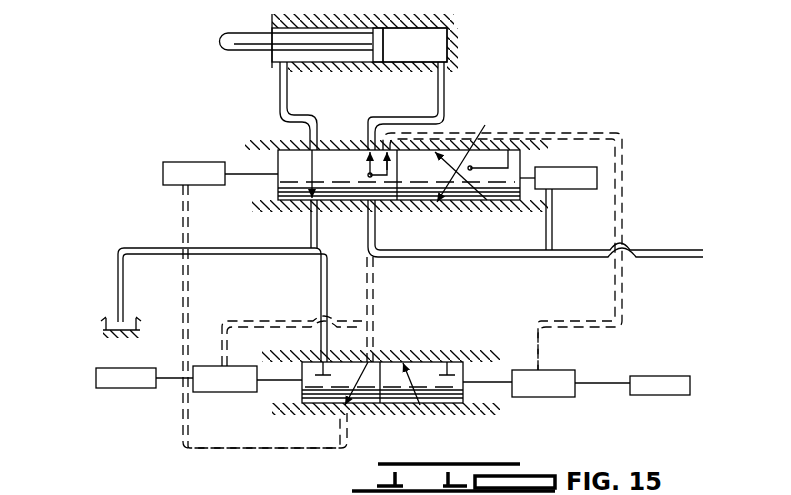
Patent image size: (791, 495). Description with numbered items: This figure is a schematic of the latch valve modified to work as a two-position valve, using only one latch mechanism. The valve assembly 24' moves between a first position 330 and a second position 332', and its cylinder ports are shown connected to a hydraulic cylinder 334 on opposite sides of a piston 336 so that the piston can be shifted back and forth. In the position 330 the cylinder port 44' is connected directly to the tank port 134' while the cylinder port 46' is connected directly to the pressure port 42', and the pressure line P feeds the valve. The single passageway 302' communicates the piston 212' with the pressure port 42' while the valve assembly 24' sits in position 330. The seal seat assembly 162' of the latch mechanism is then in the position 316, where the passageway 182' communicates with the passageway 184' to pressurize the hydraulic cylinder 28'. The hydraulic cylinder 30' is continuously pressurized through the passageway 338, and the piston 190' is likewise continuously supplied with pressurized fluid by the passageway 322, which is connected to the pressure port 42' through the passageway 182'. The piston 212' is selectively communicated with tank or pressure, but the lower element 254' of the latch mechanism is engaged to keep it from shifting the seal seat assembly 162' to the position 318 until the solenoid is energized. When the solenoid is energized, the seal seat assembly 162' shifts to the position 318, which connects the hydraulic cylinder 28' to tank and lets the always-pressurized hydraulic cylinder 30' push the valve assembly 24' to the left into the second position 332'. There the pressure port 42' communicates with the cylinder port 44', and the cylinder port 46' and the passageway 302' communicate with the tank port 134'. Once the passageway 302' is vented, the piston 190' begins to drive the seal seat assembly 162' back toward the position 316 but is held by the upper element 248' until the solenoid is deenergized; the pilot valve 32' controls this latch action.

The hydraulic cylinder 334 is at (455, 37).
The piston 336 is at (333, 65).
The cylinder port 44' is at (308, 155).
The cylinder port 46' is at (434, 119).
The second position 332' is at (472, 152).
The first position 330 is at (289, 158).
The hydraulic cylinder 28' is at (209, 154).
The hydraulic cylinder 30' is at (595, 165).
The valve assembly 24' is at (472, 230).
The passageway 338 is at (553, 244).
The pressure line P is at (697, 237).
The tank port 134' is at (214, 287).
The pressure port 42' is at (535, 246).
The passageway 322 is at (257, 308).
The passageway 182' is at (406, 309).
The valve 32' is at (462, 315).
The seal seat assembly 162' is at (387, 366).
The piston 190' is at (247, 359).
The upper element 248' is at (117, 397).
The piston 212' is at (548, 365).
The lower element 254' is at (652, 361).
The position 316 is at (376, 407).
The position 318 is at (446, 407).
The passageway 184' is at (247, 334).
The passageway 302' is at (502, 230).